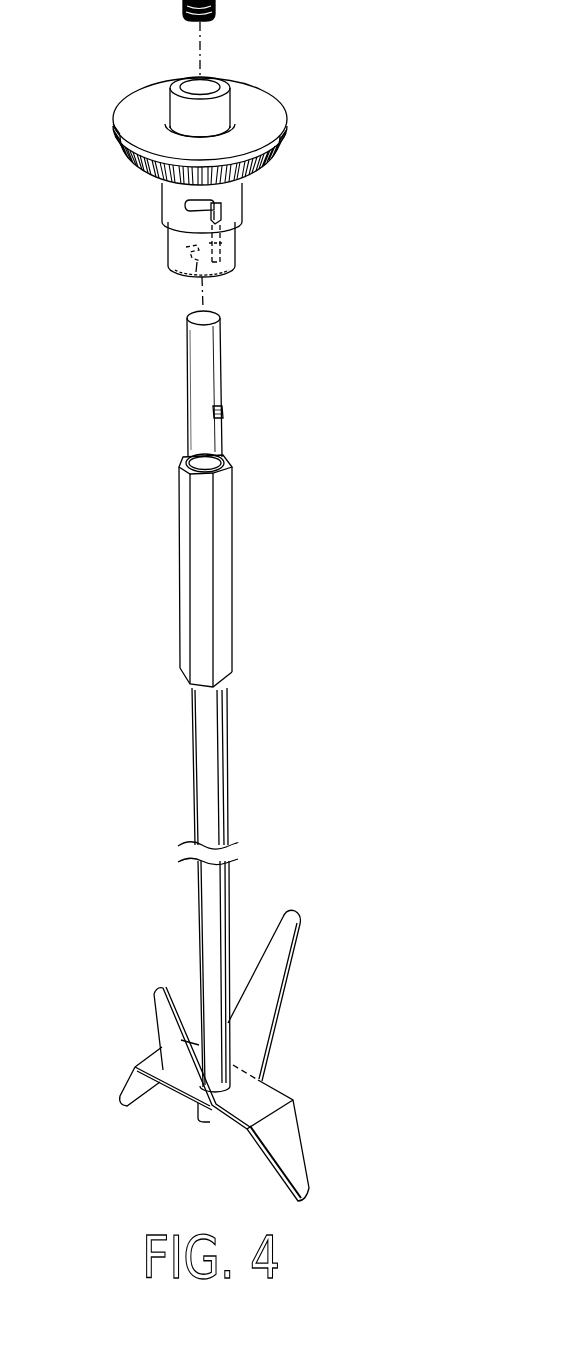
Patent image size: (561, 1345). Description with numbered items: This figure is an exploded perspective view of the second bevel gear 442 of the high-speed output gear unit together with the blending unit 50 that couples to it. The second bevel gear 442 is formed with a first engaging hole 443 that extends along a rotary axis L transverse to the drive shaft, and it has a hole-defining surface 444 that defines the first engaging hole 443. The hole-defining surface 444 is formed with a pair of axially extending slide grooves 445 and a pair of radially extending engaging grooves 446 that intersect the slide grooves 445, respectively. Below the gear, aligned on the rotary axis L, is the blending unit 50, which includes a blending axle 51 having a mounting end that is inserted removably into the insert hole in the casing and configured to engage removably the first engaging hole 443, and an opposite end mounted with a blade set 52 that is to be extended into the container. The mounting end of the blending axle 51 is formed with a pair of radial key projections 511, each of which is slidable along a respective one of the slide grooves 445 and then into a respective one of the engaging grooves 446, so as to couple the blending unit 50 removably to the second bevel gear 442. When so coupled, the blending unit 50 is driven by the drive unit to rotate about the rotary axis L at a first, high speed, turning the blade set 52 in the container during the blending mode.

The second bevel gear 442 is at (268, 105).
The first engaging hole 443 is at (177, 250).
The hole-defining surface 444 is at (190, 282).
The slide grooves 445 is at (240, 244).
The engaging grooves 446 is at (187, 205).
The rotary axis L is at (204, 301).
The blending unit 50 is at (233, 619).
The blending axle 51 is at (208, 370).
The radial key projections 511 is at (223, 412).
The blade set 52 is at (278, 1018).